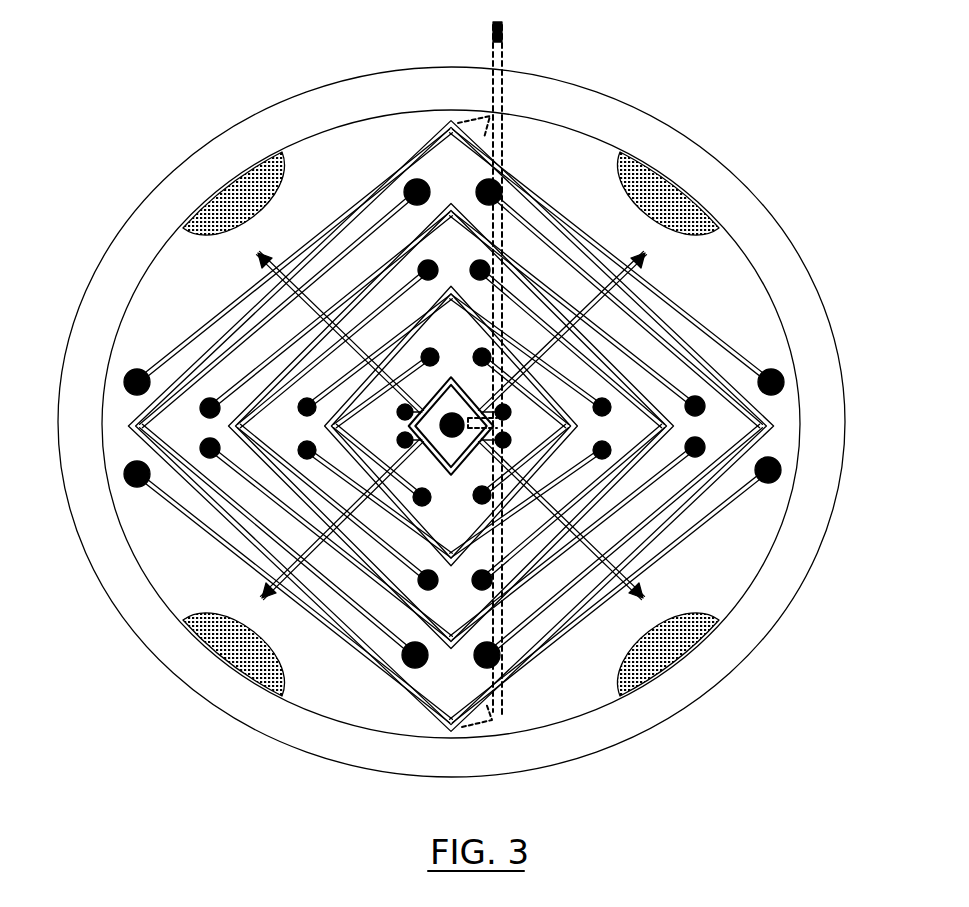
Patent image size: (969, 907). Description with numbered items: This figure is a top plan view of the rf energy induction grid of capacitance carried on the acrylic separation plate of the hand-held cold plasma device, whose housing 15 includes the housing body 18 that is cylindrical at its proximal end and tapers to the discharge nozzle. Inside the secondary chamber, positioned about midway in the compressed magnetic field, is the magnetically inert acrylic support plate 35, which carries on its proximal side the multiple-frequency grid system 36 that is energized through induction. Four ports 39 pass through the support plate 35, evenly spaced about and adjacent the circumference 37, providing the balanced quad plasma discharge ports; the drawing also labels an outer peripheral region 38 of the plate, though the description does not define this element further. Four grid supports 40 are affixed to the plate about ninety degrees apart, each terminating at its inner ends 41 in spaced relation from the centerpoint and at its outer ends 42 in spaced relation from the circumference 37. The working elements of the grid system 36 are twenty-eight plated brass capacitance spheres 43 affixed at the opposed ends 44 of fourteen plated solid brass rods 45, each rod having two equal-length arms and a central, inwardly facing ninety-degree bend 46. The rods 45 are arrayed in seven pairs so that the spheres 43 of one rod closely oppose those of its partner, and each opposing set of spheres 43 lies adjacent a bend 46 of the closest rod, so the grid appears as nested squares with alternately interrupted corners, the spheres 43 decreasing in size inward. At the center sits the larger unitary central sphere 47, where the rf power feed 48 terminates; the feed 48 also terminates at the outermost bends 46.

The housing 15 is at (358, 98).
The housing body 18 is at (756, 427).
The support plate 35 is at (203, 250).
The multiple-frequency grid system 36 is at (484, 137).
The circumference 37 is at (608, 144).
The peripheral ring 38 is at (662, 110).
The ports 39 is at (688, 652).
The grid supports 40 is at (296, 590).
The inner ends 41 is at (456, 387).
The outer ends 42 is at (636, 257).
The capacitance spheres 43 is at (785, 370).
The opposed ends 44 is at (750, 368).
The rods 45 is at (466, 580).
The bend 46 is at (138, 415).
The central sphere 47 is at (423, 397).
The rf power feed 48 is at (505, 44).